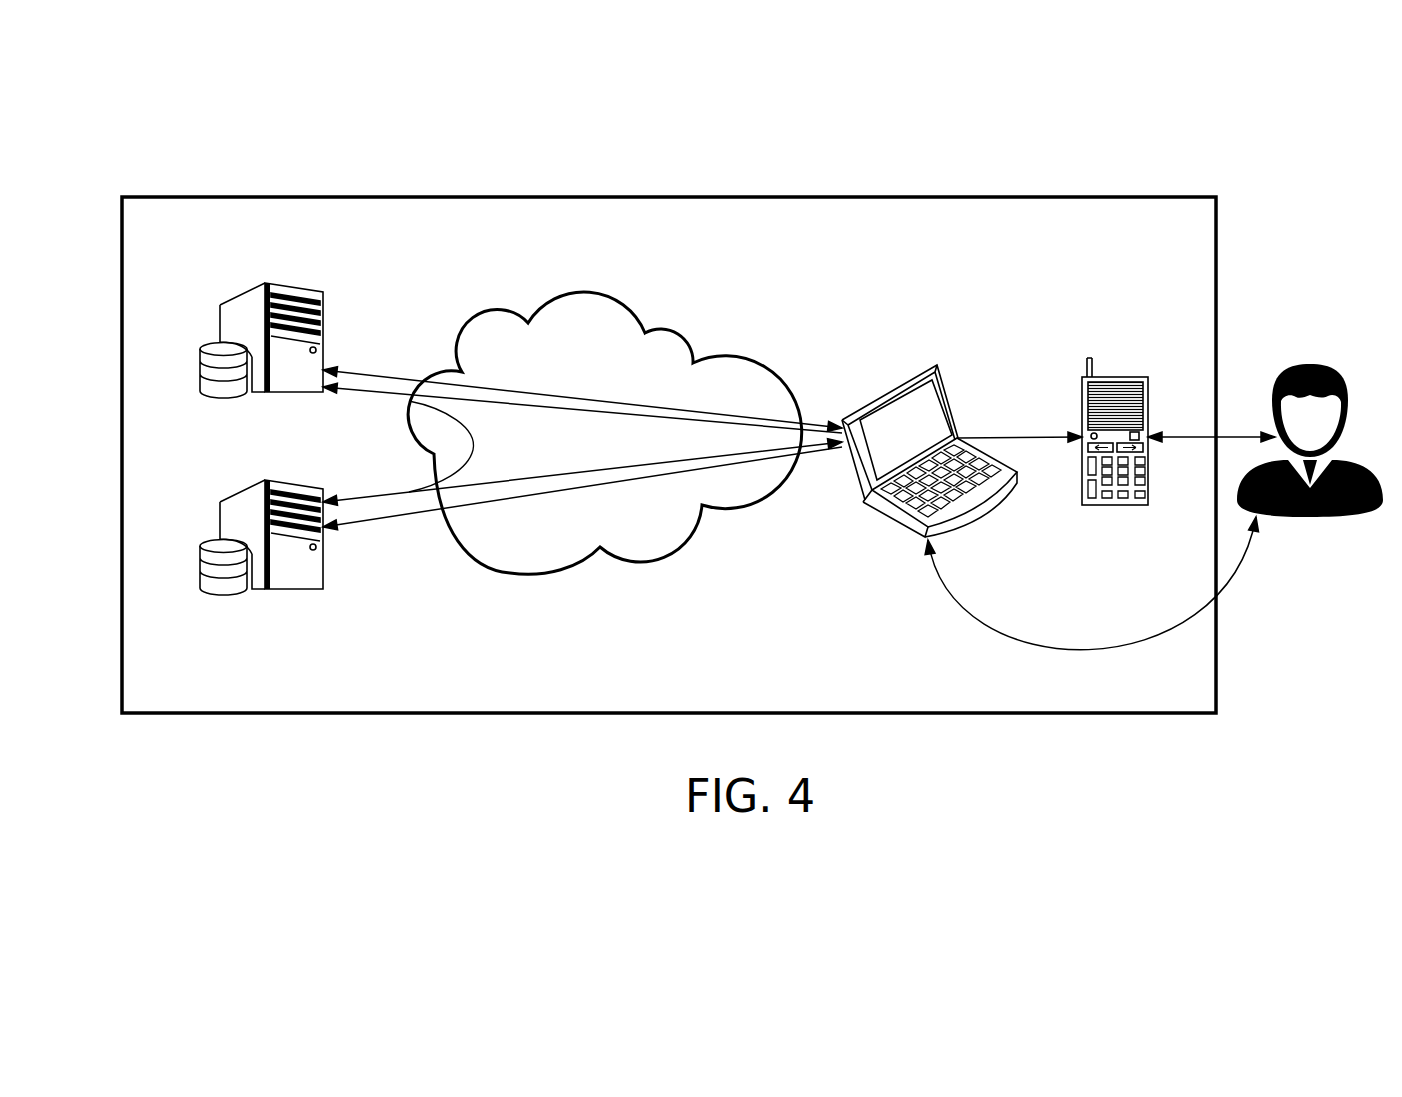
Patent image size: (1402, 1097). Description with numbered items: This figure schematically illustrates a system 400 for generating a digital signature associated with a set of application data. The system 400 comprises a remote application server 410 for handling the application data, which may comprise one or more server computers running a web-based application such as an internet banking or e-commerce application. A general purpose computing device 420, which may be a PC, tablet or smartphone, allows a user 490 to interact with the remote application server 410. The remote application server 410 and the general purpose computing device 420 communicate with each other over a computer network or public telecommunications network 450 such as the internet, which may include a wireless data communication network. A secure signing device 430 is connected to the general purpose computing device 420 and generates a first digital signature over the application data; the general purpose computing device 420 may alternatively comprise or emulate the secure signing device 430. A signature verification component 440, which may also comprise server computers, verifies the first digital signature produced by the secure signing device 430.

The system 400 is at (758, 196).
The remote application server 410 is at (245, 317).
The general purpose computing device 420 is at (912, 530).
The secure signing device 430 is at (1117, 506).
The signature verification component 440 is at (245, 514).
The public telecommunications network 450 is at (580, 291).
The user 490 is at (1279, 518).